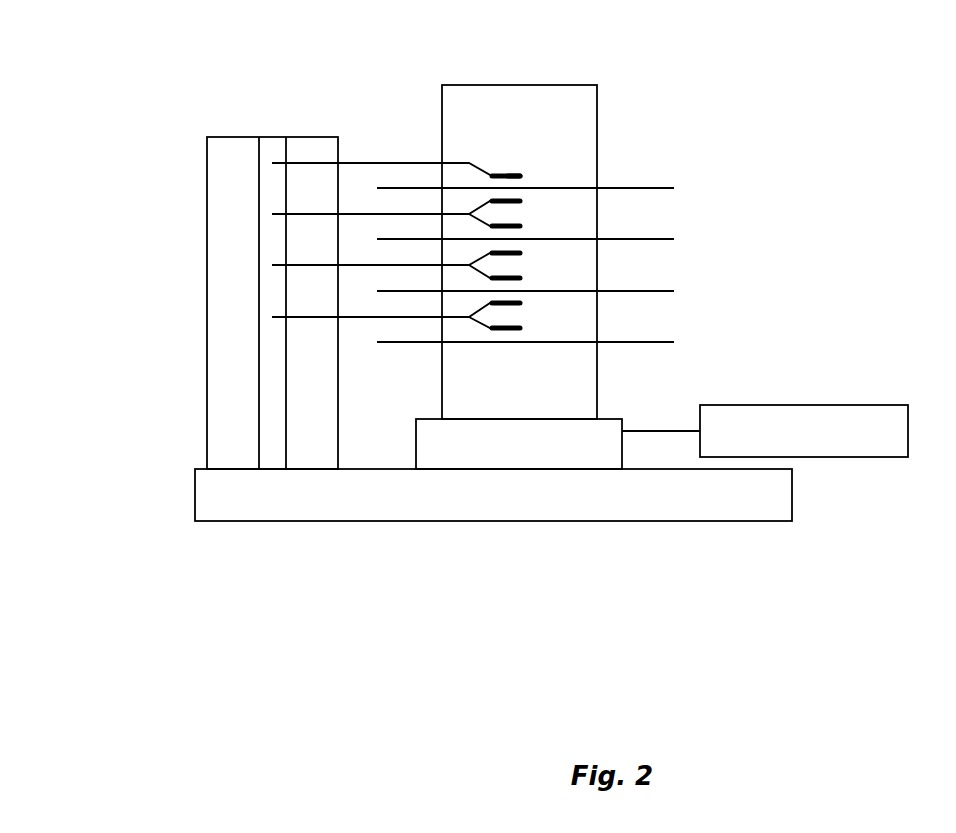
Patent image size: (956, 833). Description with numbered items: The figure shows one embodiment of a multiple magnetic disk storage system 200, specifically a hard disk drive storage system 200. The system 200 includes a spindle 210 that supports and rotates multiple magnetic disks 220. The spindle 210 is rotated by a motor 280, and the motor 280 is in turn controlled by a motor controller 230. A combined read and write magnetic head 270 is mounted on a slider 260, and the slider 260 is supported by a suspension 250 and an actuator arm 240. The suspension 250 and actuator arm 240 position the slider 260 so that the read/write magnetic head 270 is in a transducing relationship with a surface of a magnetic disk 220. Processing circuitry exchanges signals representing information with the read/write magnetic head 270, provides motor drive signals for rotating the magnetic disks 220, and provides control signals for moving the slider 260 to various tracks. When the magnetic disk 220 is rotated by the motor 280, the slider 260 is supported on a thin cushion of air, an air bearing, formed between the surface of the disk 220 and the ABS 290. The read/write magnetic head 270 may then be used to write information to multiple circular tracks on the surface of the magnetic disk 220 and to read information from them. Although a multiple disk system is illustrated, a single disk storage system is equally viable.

The hard disk drive storage system 200 is at (76, 602).
The spindle 210 is at (584, 85).
The magnetic disks 220 is at (635, 188).
The motor controller 230 is at (832, 403).
The actuator arm 240 is at (390, 162).
The suspension 250 is at (480, 162).
The slider 260 is at (510, 171).
The read/write magnetic head 270 is at (519, 331).
The motor 280 is at (613, 417).
The ABS 290 is at (518, 173).